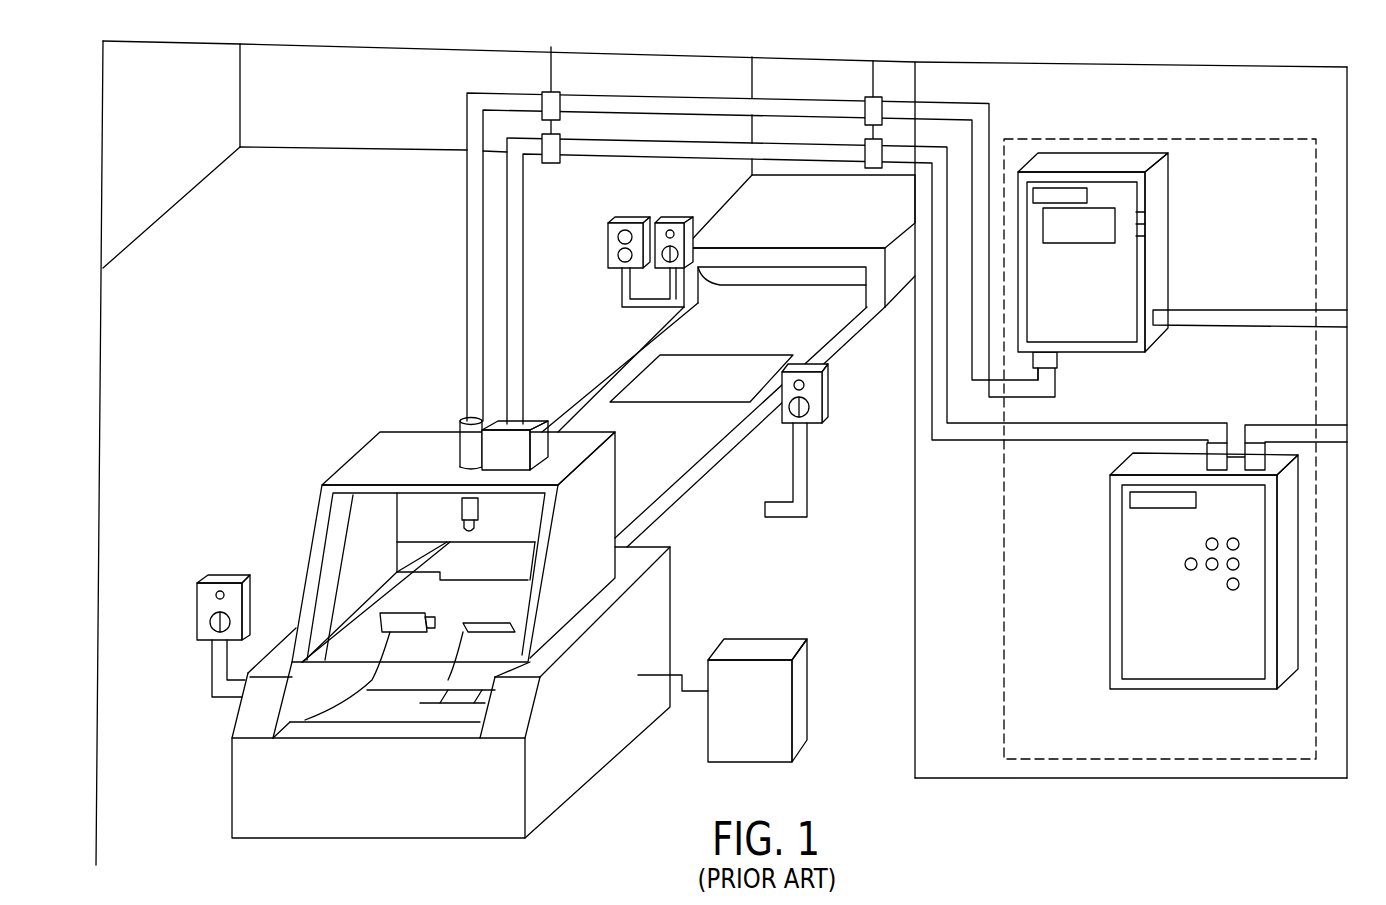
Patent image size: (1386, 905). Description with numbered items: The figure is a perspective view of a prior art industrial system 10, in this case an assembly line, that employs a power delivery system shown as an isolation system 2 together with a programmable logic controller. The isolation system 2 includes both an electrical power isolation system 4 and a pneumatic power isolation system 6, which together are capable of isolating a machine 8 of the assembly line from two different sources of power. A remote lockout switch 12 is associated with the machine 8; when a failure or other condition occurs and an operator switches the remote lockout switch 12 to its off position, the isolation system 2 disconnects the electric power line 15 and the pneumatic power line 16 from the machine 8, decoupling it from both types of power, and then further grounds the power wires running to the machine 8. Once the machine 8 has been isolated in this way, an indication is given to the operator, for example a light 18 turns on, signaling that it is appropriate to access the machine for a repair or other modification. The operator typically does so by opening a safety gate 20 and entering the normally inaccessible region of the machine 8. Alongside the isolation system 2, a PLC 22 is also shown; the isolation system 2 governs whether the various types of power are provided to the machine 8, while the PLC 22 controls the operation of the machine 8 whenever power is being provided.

The isolation system 2 is at (1160, 759).
The electrical power isolation system 4 is at (1192, 626).
The pneumatic power isolation system 6 is at (1097, 309).
The machine 8 is at (433, 528).
The industrial system 10 is at (252, 462).
The remote lockout switch 12 is at (219, 603).
The electric power line 15 is at (1298, 425).
The pneumatic power line 16 is at (1286, 310).
The light 18 is at (233, 598).
The safety gate 20 is at (315, 533).
The PLC 22 is at (733, 726).